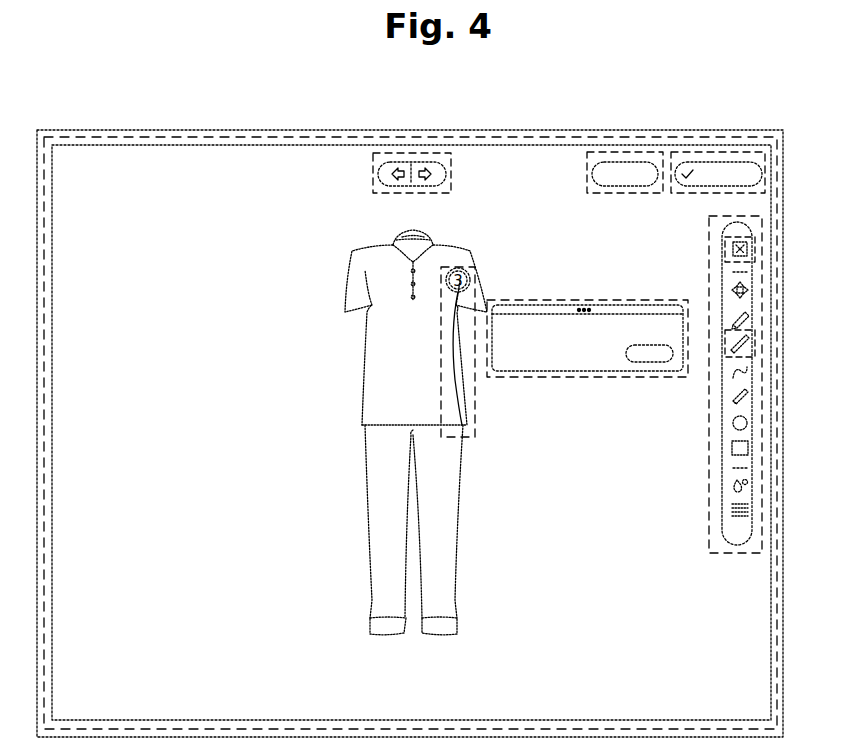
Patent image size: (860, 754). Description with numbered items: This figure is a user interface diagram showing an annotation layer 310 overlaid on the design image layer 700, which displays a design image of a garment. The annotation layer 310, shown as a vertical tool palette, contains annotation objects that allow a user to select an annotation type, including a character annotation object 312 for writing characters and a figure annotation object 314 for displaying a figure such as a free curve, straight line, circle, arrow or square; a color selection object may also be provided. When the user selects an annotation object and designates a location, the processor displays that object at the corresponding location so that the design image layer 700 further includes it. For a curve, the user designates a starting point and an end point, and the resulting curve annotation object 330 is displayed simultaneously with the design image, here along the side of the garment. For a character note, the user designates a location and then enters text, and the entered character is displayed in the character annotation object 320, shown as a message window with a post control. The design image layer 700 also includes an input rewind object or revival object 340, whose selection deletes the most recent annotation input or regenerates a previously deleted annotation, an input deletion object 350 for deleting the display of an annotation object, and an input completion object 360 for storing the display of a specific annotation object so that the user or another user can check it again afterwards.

The design image layer 700 is at (330, 137).
The input rewind object or revival object 340 is at (428, 153).
The input deletion object 350 is at (641, 152).
The input completion object 360 is at (741, 152).
The curve annotation object 330 is at (477, 403).
The character annotation object 320 is at (627, 300).
The annotation layer 310 is at (763, 283).
The character annotation object 312 is at (755, 247).
The figure annotation object 314 is at (755, 339).